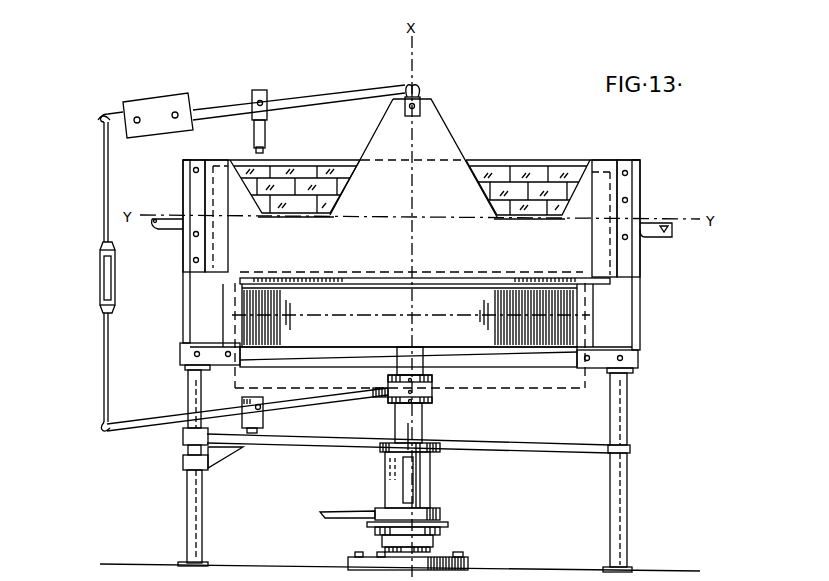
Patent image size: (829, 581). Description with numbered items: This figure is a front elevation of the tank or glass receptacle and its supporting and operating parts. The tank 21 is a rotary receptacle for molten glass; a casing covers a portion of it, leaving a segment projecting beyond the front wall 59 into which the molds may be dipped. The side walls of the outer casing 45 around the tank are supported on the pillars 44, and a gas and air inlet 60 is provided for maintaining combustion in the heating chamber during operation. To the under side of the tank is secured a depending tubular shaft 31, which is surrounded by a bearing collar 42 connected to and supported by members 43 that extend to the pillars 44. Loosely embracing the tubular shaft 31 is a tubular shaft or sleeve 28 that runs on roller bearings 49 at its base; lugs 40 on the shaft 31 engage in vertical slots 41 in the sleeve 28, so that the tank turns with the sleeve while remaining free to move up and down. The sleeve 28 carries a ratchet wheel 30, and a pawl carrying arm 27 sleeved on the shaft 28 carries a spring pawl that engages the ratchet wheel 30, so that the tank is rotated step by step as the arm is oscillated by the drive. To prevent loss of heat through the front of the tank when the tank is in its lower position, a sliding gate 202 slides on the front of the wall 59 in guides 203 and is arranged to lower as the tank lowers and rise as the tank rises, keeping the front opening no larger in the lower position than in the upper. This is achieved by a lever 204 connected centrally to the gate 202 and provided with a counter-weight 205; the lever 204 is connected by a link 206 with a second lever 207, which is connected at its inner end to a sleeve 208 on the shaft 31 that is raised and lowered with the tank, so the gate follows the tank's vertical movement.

The tank 21 is at (303, 326).
The pawl carrying arm 27 is at (441, 514).
The tubular shaft 28 is at (420, 497).
The ratchet wheel 30 is at (449, 524).
The depending tubular shaft 31 is at (403, 424).
The lugs 40 is at (402, 458).
The vertical slots 41 is at (410, 475).
The bearing collar 42 is at (398, 443).
The members 43 is at (272, 444).
The pillars 44 is at (194, 497).
The outer casing 45 is at (641, 300).
The roller bearings 49 is at (432, 548).
The front wall 59 is at (532, 175).
The gas and air inlet 60 is at (168, 224).
The sliding gate 202 is at (430, 138).
The guides 203 is at (217, 183).
The lever 204 is at (318, 97).
The counter-weight 205 is at (165, 105).
The link 206 is at (107, 220).
The lever 207 is at (122, 422).
The sleeve 208 is at (433, 390).